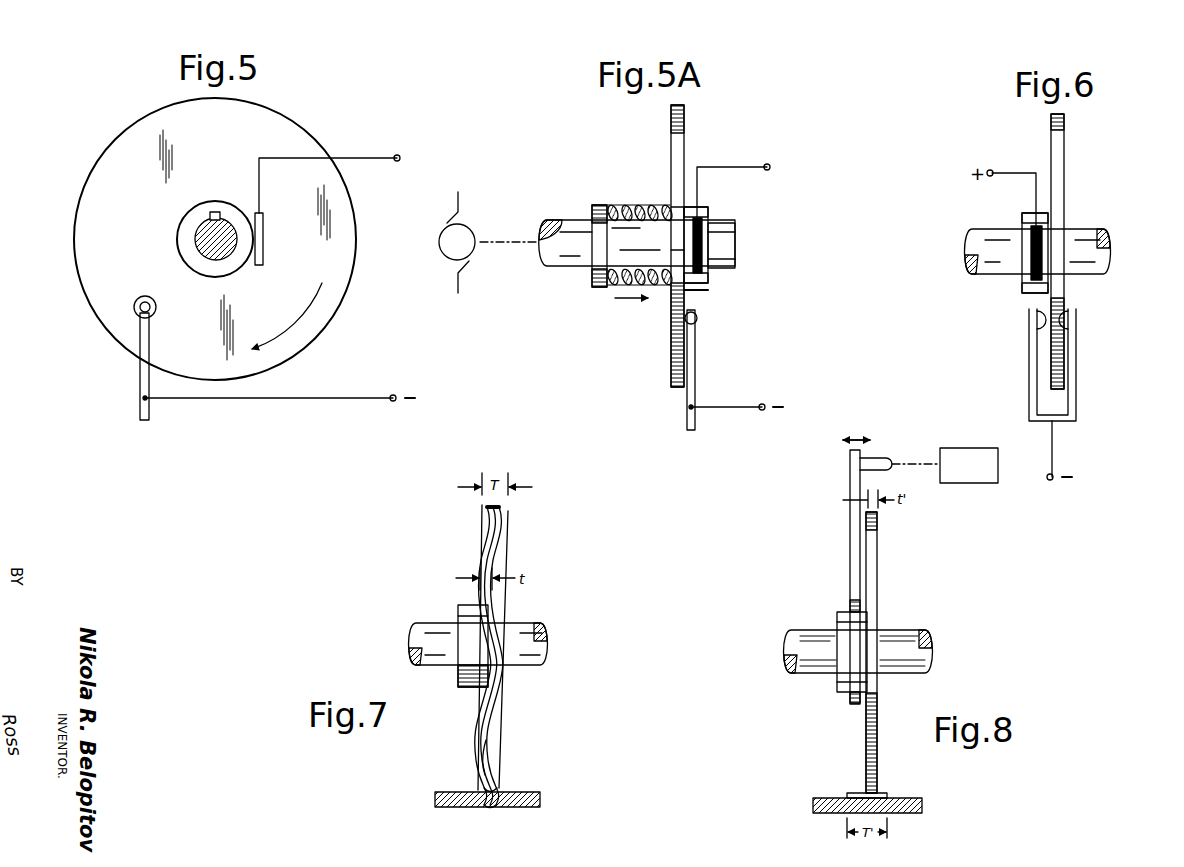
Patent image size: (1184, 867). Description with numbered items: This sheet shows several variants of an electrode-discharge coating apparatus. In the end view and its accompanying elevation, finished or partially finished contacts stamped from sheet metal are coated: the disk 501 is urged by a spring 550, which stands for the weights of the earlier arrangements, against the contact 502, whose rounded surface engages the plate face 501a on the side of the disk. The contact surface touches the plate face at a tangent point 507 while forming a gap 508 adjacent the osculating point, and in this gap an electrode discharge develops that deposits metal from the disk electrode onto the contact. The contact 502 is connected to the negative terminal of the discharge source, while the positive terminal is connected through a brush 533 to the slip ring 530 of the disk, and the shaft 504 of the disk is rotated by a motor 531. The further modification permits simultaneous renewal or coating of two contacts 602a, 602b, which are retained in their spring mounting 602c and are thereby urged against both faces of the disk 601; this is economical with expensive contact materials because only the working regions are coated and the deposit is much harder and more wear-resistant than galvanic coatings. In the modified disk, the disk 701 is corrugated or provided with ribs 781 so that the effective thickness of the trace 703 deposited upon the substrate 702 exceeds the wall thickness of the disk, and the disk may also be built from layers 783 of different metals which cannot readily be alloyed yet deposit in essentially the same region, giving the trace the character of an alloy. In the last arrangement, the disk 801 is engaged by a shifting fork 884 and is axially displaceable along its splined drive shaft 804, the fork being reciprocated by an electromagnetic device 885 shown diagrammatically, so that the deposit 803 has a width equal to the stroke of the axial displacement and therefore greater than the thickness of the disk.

In FIG. 5, the disk 501 is at (333, 313).
In FIG. 5A, the plate face 501a is at (670, 370).
In FIG. 5, the contact 502 is at (143, 333).
In FIG. 5A, the contact 502 is at (697, 357).
In FIG. 5, the shaft 504 is at (200, 222).
In FIG. 5A, the shaft 504 is at (577, 225).
In FIG. 5A, the tangent point 507 is at (682, 317).
In FIG. 5A, the gap 508 is at (684, 298).
In FIG. 5, the slip ring 530 is at (177, 250).
In FIG. 5A, the motor 531 is at (463, 250).
In FIG. 5, the brush 533 is at (263, 257).
In FIG. 5A, the brush 533 is at (735, 243).
In FIG. 5A, the spring 550 is at (643, 217).
In FIG. 6, the disk 601 is at (1062, 168).
In FIG. 6, the contact 602a is at (1070, 320).
In FIG. 6, the contact 602b is at (1037, 320).
In FIG. 6, the spring mounting 602c is at (1076, 395).
In FIG. 7, the disk 701 is at (510, 530).
In FIG. 7, the substrate 702 is at (437, 795).
In FIG. 7, the trace 703 is at (498, 785).
In FIG. 7, the ribs 781 is at (502, 737).
In FIG. 7, the layers 783 is at (503, 677).
In FIG. 8, the disk 801 is at (878, 542).
In FIG. 8, the deposit 803 is at (887, 795).
In FIG. 8, the splined drive shaft 804 is at (933, 638).
In FIG. 8, the shifting fork 884 is at (848, 605).
In FIG. 8, the electromagnetic device 885 is at (988, 478).